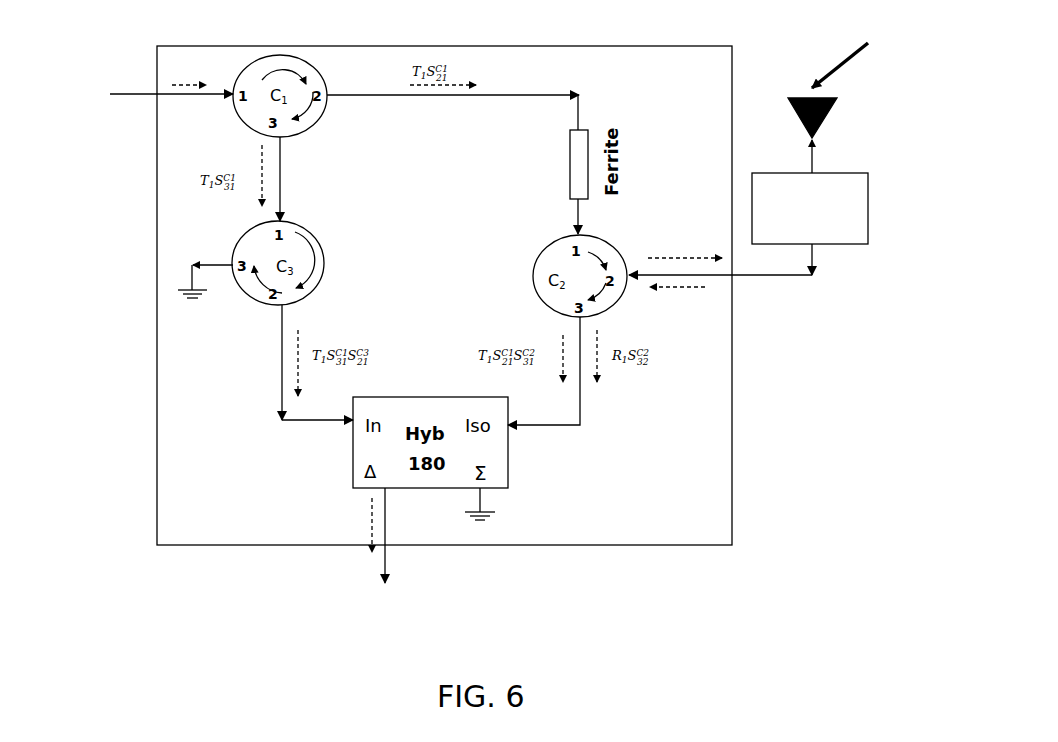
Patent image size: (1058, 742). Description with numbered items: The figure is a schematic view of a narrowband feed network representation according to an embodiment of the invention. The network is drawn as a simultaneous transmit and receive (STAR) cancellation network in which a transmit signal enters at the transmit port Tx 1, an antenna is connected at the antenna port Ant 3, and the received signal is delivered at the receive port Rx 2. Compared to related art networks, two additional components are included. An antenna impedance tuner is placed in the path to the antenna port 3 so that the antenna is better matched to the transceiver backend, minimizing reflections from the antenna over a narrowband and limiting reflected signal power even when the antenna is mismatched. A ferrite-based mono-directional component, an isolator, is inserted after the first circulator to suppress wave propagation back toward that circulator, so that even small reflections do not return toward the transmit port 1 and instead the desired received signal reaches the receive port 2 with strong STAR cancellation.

The Tx port 1 is at (125, 87).
The Rx port 2 is at (368, 557).
The antenna port 3 is at (775, 172).